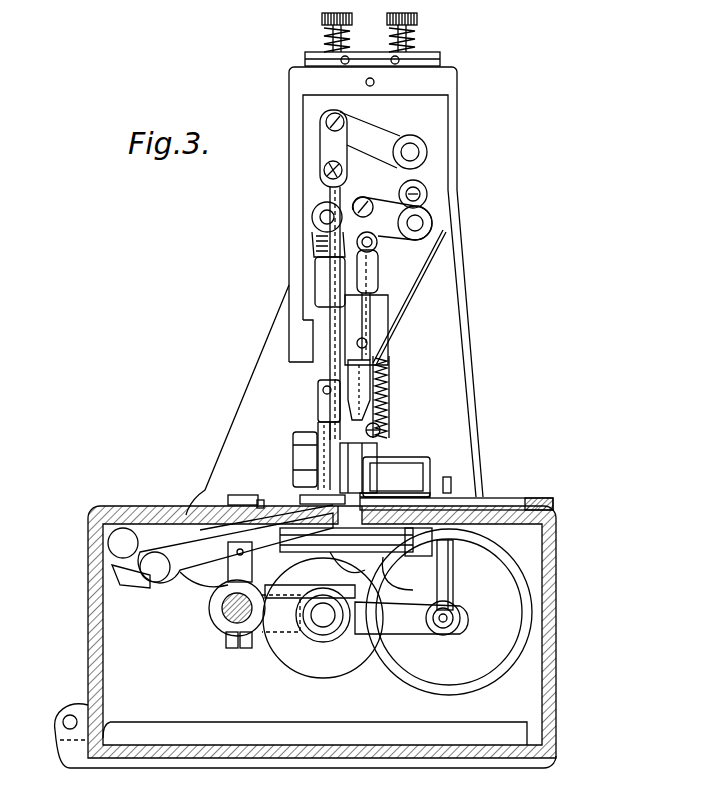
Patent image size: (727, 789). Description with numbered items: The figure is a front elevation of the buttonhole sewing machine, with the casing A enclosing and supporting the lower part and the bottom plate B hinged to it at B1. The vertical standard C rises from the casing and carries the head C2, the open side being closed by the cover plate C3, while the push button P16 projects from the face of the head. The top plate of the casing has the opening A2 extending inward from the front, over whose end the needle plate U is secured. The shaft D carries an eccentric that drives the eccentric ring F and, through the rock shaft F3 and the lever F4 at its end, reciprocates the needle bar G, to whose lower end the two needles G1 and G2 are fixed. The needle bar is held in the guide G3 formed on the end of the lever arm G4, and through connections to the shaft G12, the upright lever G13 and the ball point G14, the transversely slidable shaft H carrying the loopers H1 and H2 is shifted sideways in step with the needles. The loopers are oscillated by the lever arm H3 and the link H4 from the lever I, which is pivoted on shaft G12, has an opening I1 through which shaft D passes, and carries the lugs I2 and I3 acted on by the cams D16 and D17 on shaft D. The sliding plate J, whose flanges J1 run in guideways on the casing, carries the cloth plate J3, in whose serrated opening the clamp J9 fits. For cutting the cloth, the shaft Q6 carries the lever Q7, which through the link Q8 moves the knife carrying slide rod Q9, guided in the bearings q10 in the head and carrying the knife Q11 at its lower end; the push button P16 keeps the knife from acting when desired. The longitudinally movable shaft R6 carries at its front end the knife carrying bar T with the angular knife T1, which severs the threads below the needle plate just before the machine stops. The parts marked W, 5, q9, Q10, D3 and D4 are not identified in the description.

The binding posts / thumb screws W is at (374, 39).
The head C2 is at (289, 165).
The cover plate C3 is at (458, 297).
The opening A2 is at (280, 497).
The eccentric ring F is at (335, 150).
The screws 5 is at (305, 158).
The lever F4 is at (370, 140).
The rock shaft F3 is at (418, 152).
The lever Q7 is at (427, 197).
The push button P16 is at (420, 190).
The shaft Q6 is at (432, 223).
The link Q8 is at (378, 245).
The slide q9 is at (380, 268).
The knife carrying slide rod Q9 is at (376, 290).
The vertical standard C is at (387, 397).
The needle bar G is at (320, 218).
The lever arm G4 is at (325, 248).
The guide G3 is at (318, 293).
The block Q10 is at (330, 435).
The bearings q10 is at (350, 380).
The needle G1 is at (322, 460).
The needle G2 is at (316, 466).
The knife Q11 is at (340, 485).
The cloth plate J3 is at (396, 477).
The clamp J9 is at (358, 488).
The transversely slidable shaft H is at (422, 512).
The needle plate U is at (262, 500).
The angular knife T1 is at (305, 499).
The sliding plate J is at (480, 505).
The flanges J1 is at (525, 507).
The casing A is at (547, 594).
The hinge B1 is at (63, 722).
The bottom plate B is at (478, 765).
The shaft D3 is at (250, 782).
The shaft D4 is at (312, 781).
The knife carrying bar T is at (192, 540).
The longitudinally movable shaft R6 is at (148, 567).
The ball point G14 is at (227, 532).
The upright lever G13 is at (207, 585).
The shaft G12 is at (228, 614).
The looper H1 is at (250, 550).
The looper H2 is at (342, 553).
The lever arm H3 is at (413, 557).
The link H4 is at (455, 575).
The lever I is at (443, 612).
The lug I2 is at (300, 592).
The shaft D is at (323, 615).
The cam D16 is at (318, 660).
The cam D17 is at (295, 640).
The lug I3 is at (340, 650).
The opening I1 is at (362, 645).